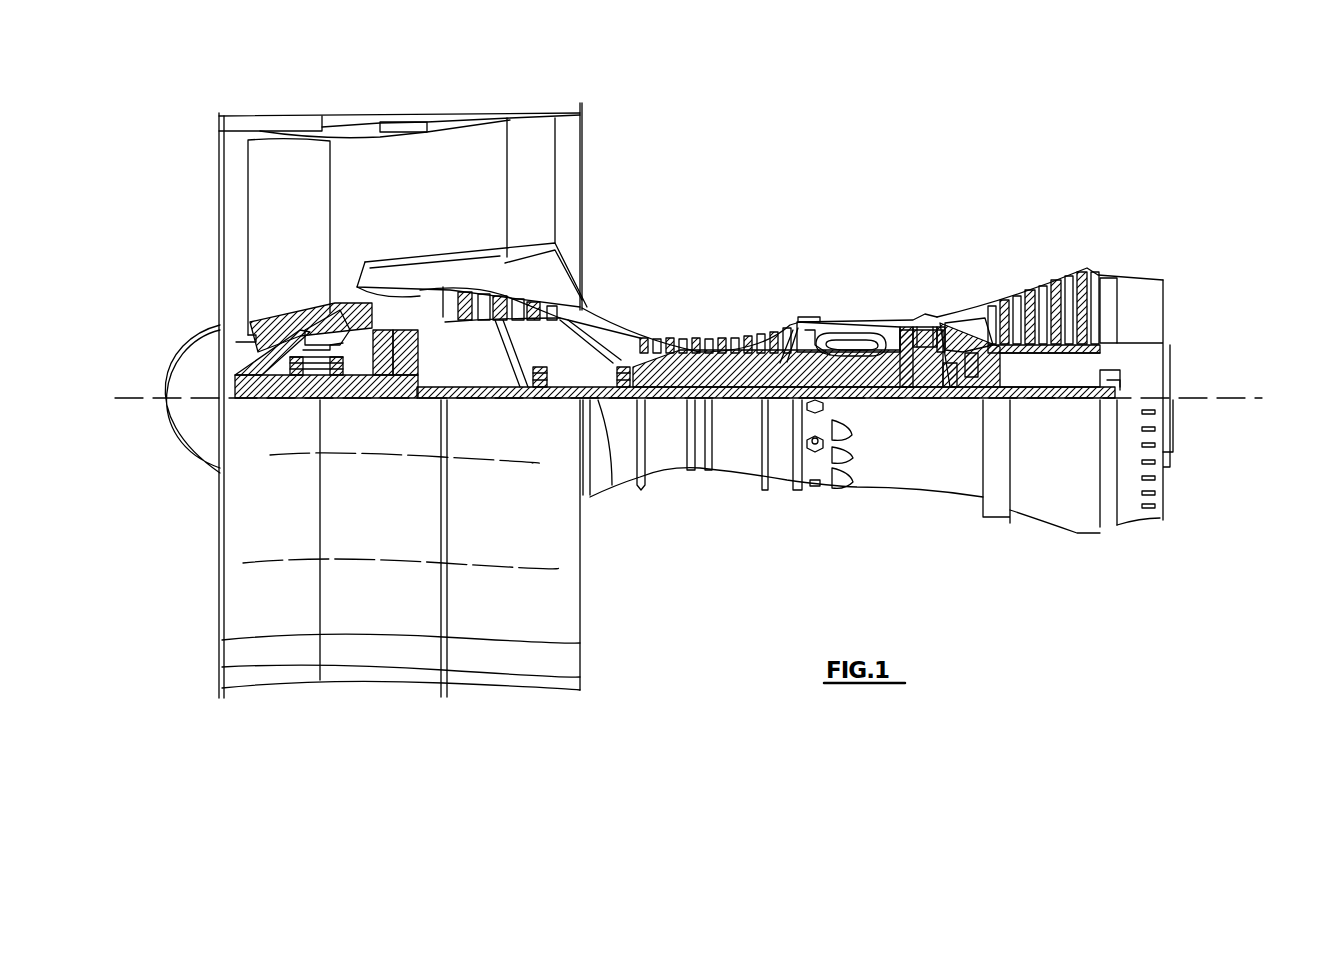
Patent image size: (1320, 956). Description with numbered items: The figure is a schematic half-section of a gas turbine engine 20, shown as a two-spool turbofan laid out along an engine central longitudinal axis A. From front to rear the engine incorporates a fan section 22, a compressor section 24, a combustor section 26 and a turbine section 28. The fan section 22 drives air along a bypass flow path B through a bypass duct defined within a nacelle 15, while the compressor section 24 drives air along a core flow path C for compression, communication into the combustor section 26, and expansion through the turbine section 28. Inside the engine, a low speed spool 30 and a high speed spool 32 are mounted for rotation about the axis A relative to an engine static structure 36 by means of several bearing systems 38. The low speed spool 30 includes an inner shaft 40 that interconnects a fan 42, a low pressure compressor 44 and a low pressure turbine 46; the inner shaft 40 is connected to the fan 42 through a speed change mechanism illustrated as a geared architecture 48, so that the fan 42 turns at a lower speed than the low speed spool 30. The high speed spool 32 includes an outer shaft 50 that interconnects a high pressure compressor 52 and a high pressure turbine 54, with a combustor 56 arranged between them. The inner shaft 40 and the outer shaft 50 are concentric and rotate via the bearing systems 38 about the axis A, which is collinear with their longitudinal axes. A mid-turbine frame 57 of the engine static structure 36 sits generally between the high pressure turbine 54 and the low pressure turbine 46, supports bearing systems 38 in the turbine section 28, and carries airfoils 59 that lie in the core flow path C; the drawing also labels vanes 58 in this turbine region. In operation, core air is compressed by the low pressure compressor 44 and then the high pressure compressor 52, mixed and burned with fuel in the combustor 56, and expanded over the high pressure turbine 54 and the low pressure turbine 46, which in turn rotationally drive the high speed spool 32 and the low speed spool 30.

The gas turbine engine 20 is at (862, 160).
The fan section 22 is at (330, 104).
The compressor section 24 is at (630, 305).
The combustor section 26 is at (855, 298).
The turbine section 28 is at (1000, 258).
The nacelle 15 is at (398, 122).
The low speed spool 30 is at (740, 404).
The high speed spool 32 is at (790, 340).
The engine static structure 36 is at (780, 488).
The bearing systems 38 is at (540, 372).
The inner shaft 40 is at (610, 405).
The fan 42 is at (283, 240).
The low pressure compressor 44 is at (510, 330).
The low pressure turbine 46 is at (1100, 258).
The geared architecture 48 is at (408, 378).
The outer shaft 50 is at (870, 398).
The high pressure compressor 52 is at (700, 355).
The high pressure turbine 54 is at (920, 330).
The combustor 56 is at (855, 340).
The mid-turbine frame 57 is at (962, 305).
The airfoils / vanes 58 is at (1050, 272).
The airfoils 59 is at (978, 360).
The engine central longitudinal axis A is at (1250, 398).
The bypass flow path B is at (364, 191).
The core flow path C is at (412, 300).